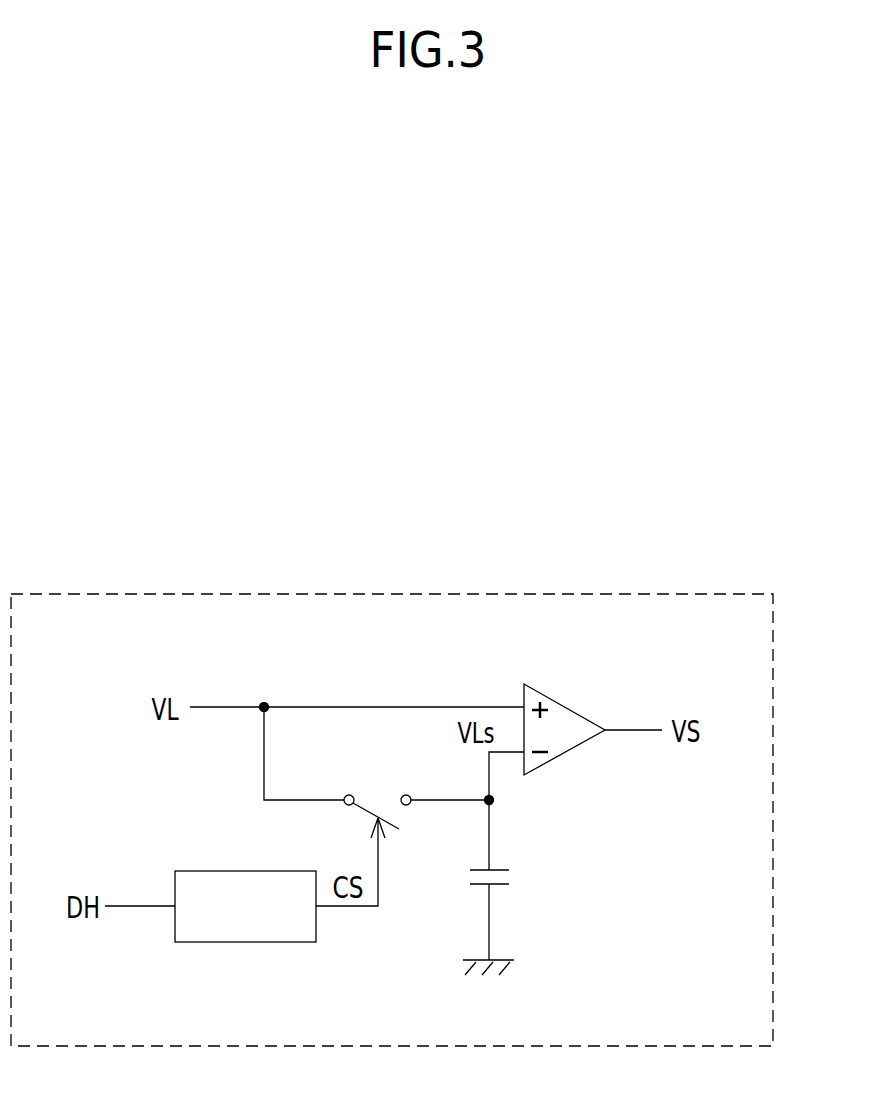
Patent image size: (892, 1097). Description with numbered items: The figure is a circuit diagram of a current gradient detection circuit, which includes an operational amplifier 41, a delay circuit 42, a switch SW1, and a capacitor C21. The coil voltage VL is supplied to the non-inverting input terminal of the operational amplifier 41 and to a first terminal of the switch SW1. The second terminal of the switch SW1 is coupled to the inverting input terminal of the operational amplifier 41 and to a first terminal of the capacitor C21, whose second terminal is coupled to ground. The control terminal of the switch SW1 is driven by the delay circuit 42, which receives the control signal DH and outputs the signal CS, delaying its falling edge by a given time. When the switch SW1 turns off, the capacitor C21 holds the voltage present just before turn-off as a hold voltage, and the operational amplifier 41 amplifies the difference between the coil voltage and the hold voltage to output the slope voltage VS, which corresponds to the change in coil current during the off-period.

The operational amplifier 41 is at (564, 703).
The delay circuit 42 is at (221, 870).
The switch SW1 is at (368, 796).
The capacitor C21 is at (500, 868).